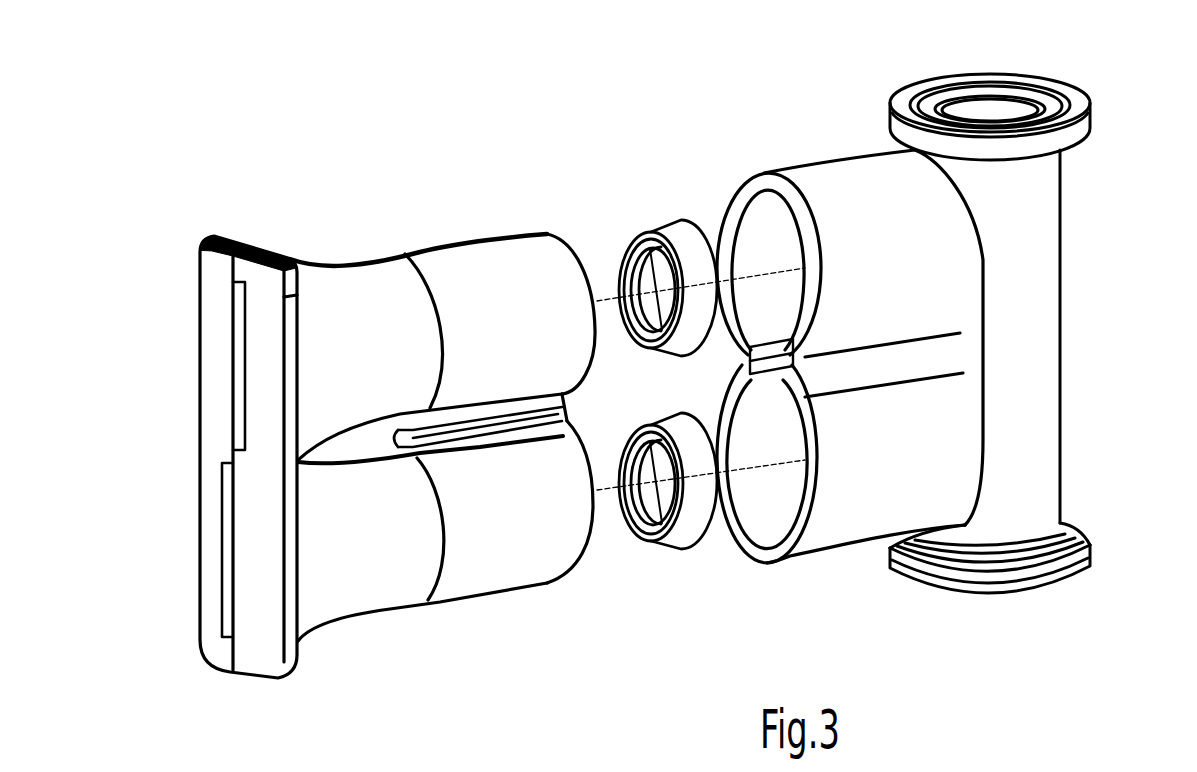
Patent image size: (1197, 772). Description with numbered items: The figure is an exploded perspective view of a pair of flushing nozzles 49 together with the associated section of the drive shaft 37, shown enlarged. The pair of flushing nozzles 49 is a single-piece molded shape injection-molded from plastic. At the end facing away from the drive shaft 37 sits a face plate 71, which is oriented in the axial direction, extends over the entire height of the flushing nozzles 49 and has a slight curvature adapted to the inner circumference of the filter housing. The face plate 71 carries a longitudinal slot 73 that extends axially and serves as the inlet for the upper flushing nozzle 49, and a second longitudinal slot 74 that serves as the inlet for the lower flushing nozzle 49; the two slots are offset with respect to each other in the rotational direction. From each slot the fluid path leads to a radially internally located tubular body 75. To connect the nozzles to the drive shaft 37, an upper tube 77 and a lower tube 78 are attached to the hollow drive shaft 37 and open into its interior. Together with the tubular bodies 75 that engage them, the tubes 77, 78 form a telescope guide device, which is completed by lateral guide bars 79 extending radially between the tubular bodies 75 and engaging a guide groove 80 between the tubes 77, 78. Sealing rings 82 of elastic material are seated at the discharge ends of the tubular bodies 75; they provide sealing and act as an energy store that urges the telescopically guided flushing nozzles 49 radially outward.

The drive shaft 37 is at (1035, 442).
The flushing nozzles 49 is at (353, 306).
The face plate 71 is at (259, 648).
The longitudinal slot 73 is at (233, 355).
The longitudinal slot 74 is at (228, 538).
The tubular body 75 is at (531, 283).
The upper tube 77 is at (850, 193).
The lower tube 78 is at (863, 503).
The guide bars 79 is at (574, 399).
The guide groove 80 is at (763, 378).
The sealing ring 82 is at (677, 228).